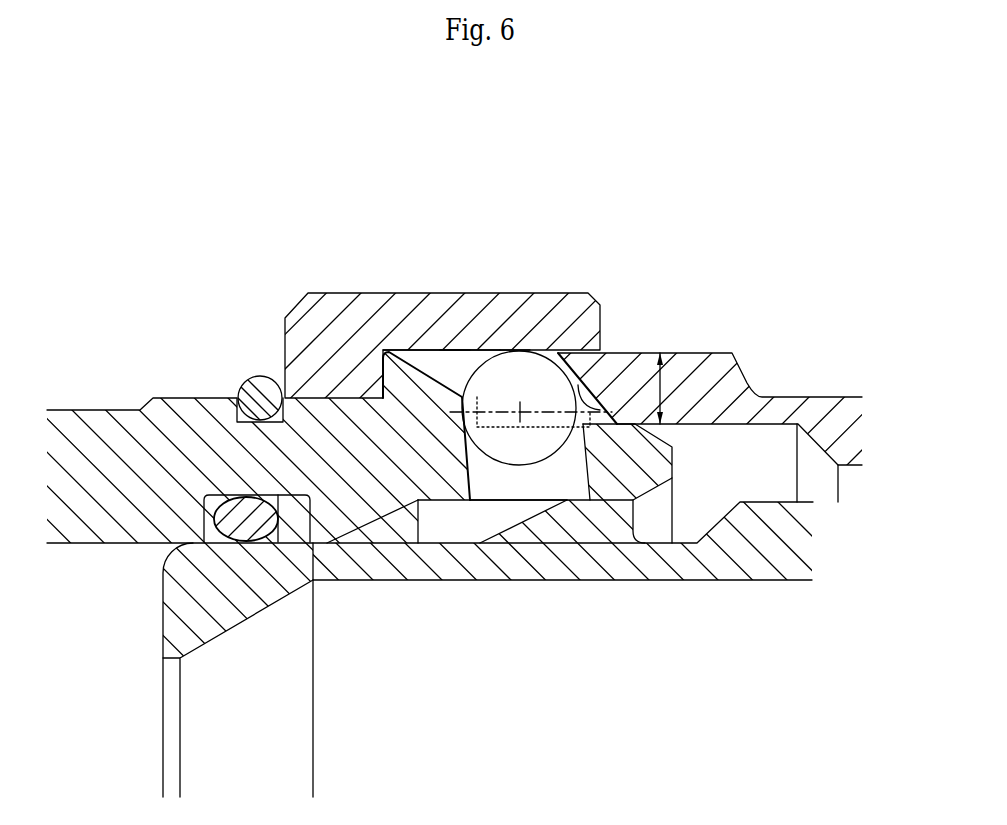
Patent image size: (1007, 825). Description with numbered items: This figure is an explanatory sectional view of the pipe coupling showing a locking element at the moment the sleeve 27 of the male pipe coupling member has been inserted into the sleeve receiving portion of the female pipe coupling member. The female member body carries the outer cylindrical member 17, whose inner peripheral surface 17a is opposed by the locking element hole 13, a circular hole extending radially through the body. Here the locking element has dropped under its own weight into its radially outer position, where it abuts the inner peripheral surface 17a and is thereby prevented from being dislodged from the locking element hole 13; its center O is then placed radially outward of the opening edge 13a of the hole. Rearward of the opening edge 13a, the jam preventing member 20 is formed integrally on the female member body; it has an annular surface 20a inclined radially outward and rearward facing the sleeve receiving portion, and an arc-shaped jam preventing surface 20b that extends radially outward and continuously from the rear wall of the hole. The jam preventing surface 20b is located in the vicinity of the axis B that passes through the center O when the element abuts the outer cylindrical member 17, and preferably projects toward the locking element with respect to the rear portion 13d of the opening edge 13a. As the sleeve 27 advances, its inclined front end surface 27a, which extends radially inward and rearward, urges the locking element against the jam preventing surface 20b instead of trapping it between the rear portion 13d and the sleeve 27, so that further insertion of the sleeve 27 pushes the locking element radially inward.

The locking element hole 13 is at (522, 487).
The opening edge 13a is at (555, 427).
The rear portion of the opening edge 13d is at (458, 428).
The outer cylindrical member 17 is at (567, 312).
The inner peripheral surface 17a is at (455, 355).
The jam preventing member 20 is at (367, 398).
The annular surface 20a is at (418, 375).
The jam preventing surface 20b is at (512, 367).
The sleeve 27 is at (687, 362).
The front end surface 27a is at (660, 352).
The axis B is at (575, 410).
The center of the locking element O is at (525, 413).